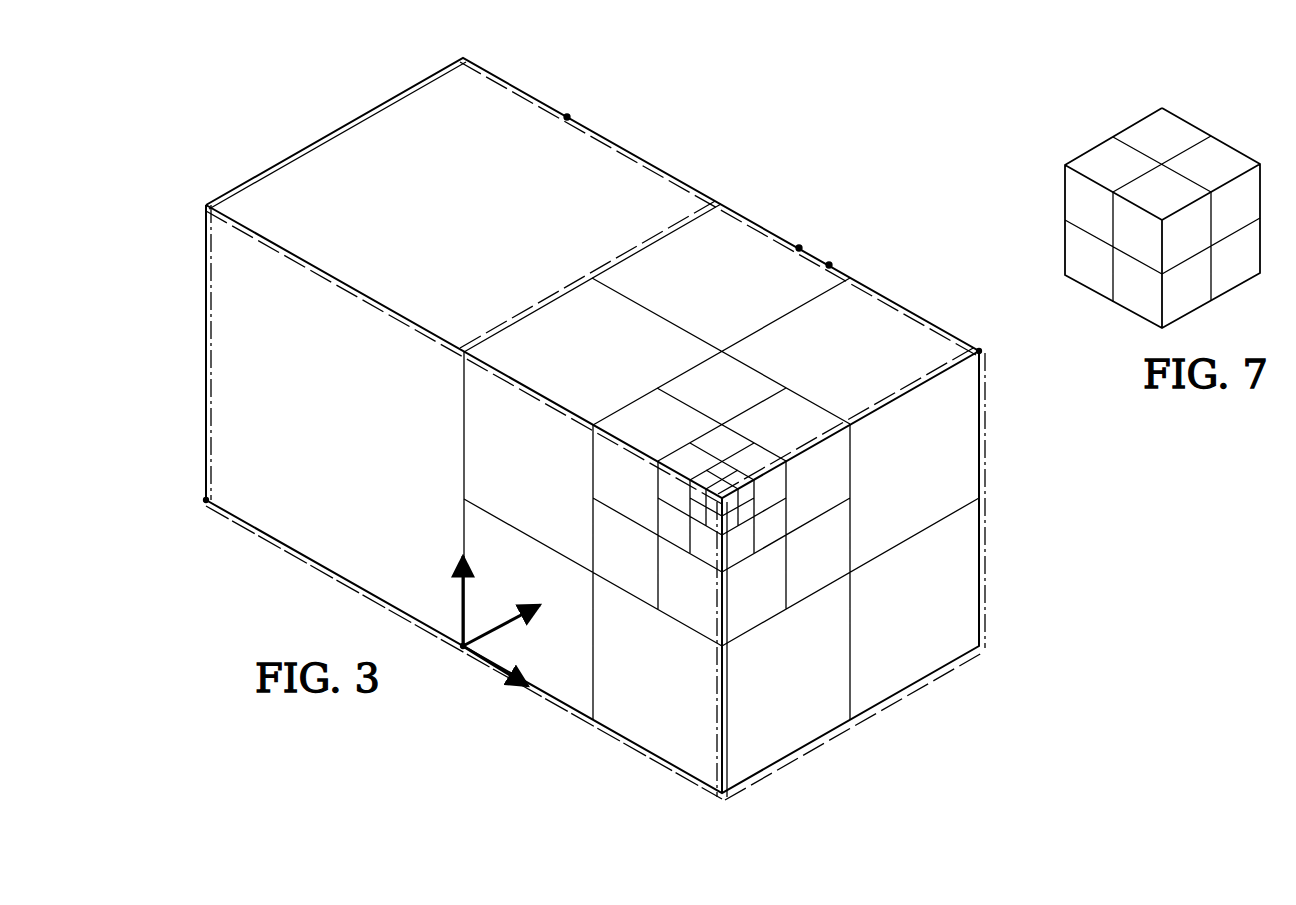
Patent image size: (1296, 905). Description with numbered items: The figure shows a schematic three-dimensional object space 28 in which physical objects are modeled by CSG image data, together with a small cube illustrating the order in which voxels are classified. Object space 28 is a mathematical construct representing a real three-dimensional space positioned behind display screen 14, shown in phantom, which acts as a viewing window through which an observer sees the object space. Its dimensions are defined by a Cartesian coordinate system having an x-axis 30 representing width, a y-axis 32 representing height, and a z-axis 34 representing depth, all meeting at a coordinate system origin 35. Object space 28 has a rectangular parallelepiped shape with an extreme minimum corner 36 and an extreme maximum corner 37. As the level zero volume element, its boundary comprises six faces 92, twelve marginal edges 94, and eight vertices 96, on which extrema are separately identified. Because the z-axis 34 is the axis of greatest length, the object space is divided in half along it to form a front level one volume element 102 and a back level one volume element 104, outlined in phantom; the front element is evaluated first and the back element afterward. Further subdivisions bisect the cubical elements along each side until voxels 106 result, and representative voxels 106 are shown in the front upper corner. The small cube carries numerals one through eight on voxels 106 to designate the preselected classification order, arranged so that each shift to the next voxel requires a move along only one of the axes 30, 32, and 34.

In FIG. 3, the display screen 14 is at (988, 571).
In FIG. 3, the three-dimensional object space 28 is at (829, 262).
In FIG. 3, the x-axis 30 is at (520, 616).
In FIG. 3, the y-axis 32 is at (462, 594).
In FIG. 3, the z-axis 34 is at (490, 663).
In FIG. 3, the coordinate system origin 35 is at (461, 646).
In FIG. 3, the extreme minimum corner 36 is at (205, 505).
In FIG. 3, the extreme maximum corner 37 is at (980, 347).
In FIG. 3, the faces 92 is at (594, 158).
In FIG. 3, the marginal edges 94 is at (314, 144).
In FIG. 3, the vertices 96 is at (206, 206).
In FIG. 3, the front level 1 volume element 102 is at (800, 246).
In FIG. 3, the back level 1 volume element 104 is at (569, 116).
In FIG. 3, the voxels 106 is at (718, 490).
In FIG. 7, the voxels 106 is at (1253, 251).